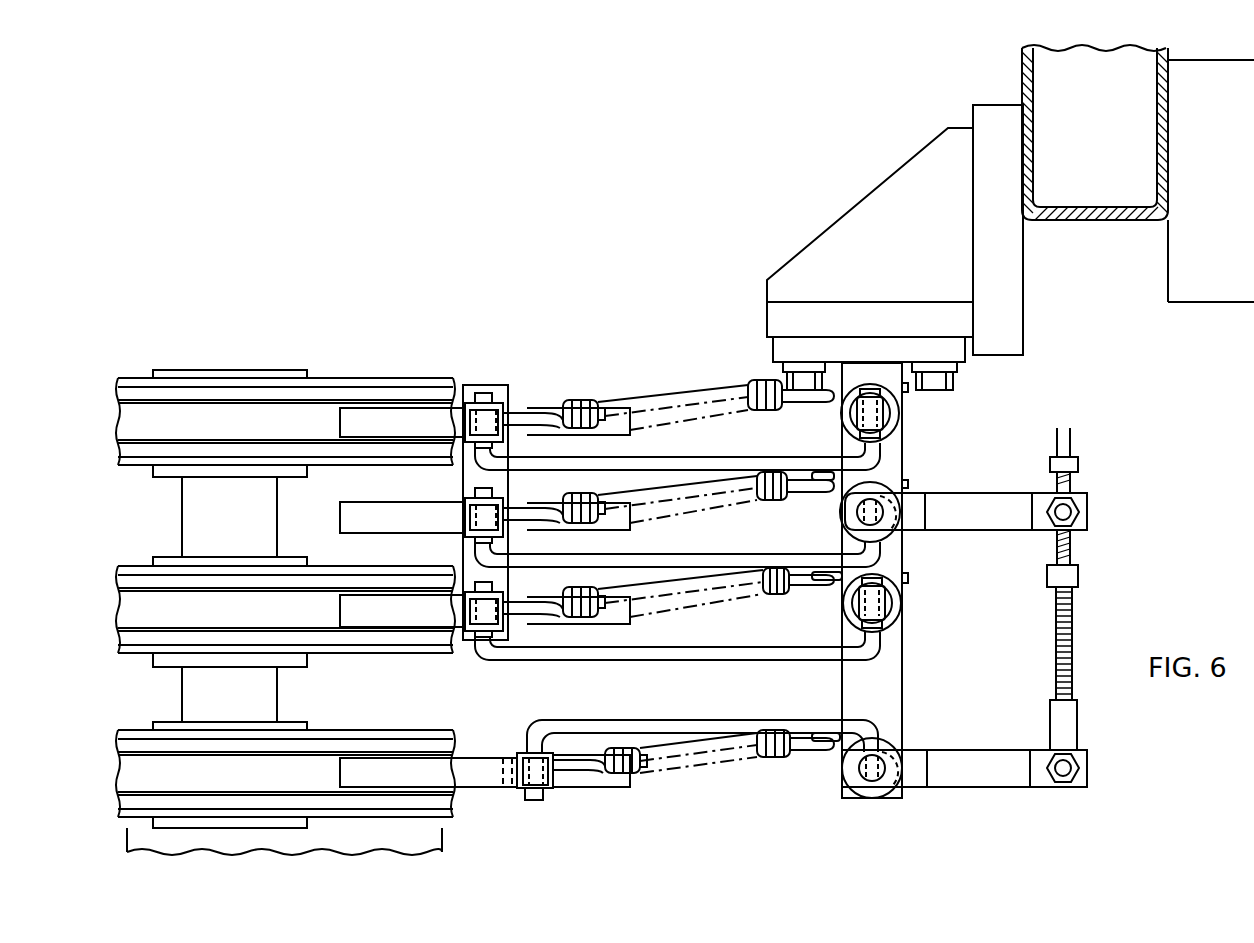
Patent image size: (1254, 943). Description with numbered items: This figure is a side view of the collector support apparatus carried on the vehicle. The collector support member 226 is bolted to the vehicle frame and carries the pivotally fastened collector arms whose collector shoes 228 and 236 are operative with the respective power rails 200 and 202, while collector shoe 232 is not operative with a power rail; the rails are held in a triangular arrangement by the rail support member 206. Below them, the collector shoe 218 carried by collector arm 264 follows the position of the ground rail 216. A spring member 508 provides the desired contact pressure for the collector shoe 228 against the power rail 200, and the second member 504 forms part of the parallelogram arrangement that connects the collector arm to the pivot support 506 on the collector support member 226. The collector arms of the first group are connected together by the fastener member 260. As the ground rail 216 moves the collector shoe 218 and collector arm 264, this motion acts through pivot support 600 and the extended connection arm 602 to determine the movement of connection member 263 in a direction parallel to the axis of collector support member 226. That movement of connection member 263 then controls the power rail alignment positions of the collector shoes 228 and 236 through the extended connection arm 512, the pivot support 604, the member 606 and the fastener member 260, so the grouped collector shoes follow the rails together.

The power rail 200 is at (347, 397).
The power rail 202 is at (398, 580).
The ground rail 216 is at (338, 745).
The rail support member 206 is at (182, 527).
The collector shoe 228 is at (352, 428).
The collector shoe 232 is at (352, 522).
The collector shoe 236 is at (352, 612).
The collector shoe 218 is at (352, 782).
The fastener member 260 is at (467, 470).
The collector arm 264 is at (547, 788).
The spring member 508 is at (660, 390).
The second member 504 is at (704, 458).
The member 606 is at (704, 558).
The collector support member 226 is at (895, 452).
The pivot support 506 is at (897, 410).
The pivot support 604 is at (893, 538).
The pivot support 600 is at (892, 790).
The extended connection arm 512 is at (1005, 493).
The extended connection arm 602 is at (978, 762).
The connection member 263 is at (1070, 618).